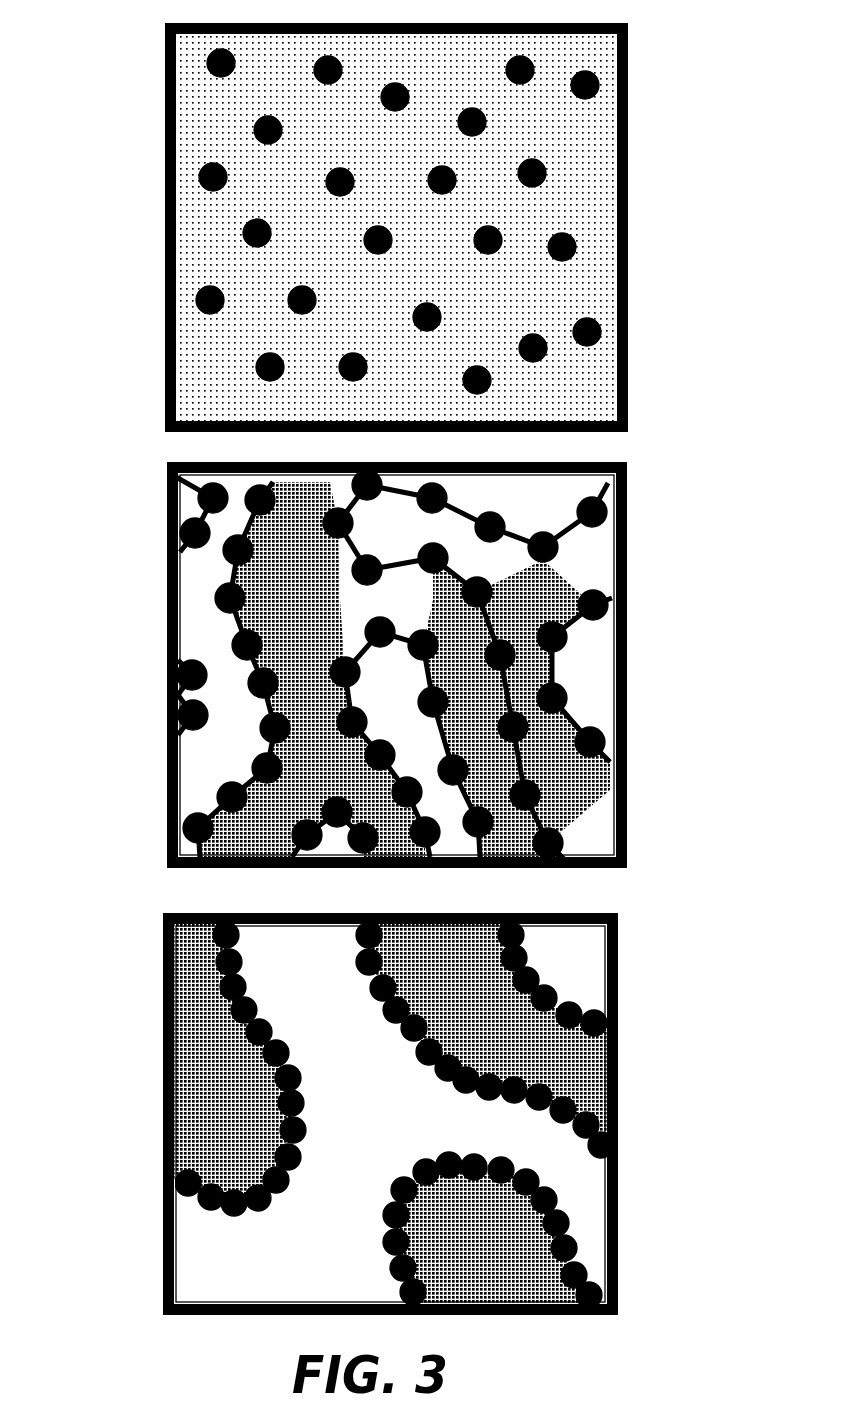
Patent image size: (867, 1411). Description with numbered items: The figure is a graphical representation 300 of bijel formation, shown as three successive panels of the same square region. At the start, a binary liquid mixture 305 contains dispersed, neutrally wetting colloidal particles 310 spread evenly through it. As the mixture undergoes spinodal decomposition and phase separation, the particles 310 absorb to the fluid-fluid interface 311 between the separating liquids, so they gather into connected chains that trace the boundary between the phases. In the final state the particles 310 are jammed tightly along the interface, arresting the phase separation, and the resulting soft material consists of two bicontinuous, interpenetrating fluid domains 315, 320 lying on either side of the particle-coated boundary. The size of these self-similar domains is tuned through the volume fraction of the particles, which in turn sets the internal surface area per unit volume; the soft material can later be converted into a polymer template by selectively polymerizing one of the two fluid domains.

The composite material 300 is at (100, 150).
The binary liquid mixture 305 is at (587, 197).
The neutrally wetting colloidal particles 310 is at (600, 90).
The fluid-fluid interface 311 is at (490, 622).
The fluid domain 315 is at (597, 685).
The fluid domain 320 is at (597, 817).